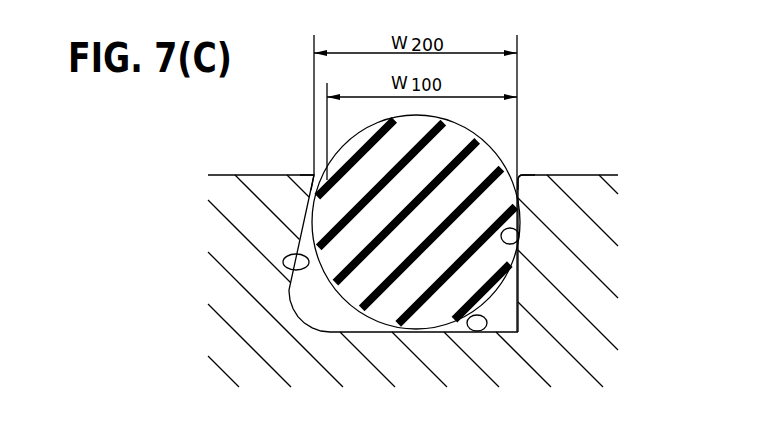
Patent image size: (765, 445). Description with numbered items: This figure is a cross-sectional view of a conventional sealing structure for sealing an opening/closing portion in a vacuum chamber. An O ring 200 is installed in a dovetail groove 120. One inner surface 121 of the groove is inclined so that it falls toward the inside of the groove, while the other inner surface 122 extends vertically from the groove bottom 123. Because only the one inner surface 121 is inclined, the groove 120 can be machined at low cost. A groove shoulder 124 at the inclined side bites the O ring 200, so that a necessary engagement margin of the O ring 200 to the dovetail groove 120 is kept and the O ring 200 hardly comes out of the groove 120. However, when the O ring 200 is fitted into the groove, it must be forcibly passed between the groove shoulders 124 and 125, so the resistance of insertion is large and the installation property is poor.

The O ring 200 is at (466, 174).
The dovetail groove 120 is at (306, 308).
The inner surface 121 is at (283, 266).
The inner surface 122 is at (519, 243).
The groove bottom 123 is at (484, 331).
The groove shoulder 124 is at (313, 172).
The groove shoulder 125 is at (528, 182).